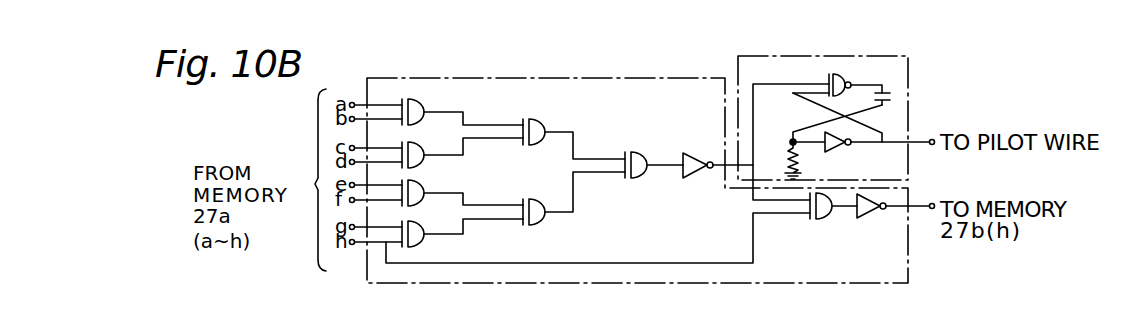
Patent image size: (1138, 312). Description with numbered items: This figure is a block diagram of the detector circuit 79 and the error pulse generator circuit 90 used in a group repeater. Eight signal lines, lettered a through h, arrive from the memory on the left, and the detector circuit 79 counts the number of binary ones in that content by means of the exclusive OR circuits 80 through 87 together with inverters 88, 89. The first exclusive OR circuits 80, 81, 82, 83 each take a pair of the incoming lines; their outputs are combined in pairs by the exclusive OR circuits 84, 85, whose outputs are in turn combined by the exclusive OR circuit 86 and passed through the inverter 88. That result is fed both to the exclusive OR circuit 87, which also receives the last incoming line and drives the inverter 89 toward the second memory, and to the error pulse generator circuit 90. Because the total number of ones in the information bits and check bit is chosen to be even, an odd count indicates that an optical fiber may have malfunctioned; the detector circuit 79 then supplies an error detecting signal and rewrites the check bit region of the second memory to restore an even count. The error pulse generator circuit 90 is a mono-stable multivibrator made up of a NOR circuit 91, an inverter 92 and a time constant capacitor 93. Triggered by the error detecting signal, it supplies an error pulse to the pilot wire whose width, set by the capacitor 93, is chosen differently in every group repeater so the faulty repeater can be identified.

The detector circuit 79 is at (815, 285).
The exclusive OR circuit 80 is at (417, 100).
The exclusive OR circuit 81 is at (417, 143).
The exclusive OR circuit 82 is at (417, 181).
The exclusive OR circuit 83 is at (417, 222).
The exclusive OR circuit 84 is at (538, 120).
The exclusive OR circuit 85 is at (549, 188).
The exclusive OR circuit 86 is at (640, 152).
The exclusive OR circuit 87 is at (825, 219).
The inverter 88 is at (695, 178).
The inverter 89 is at (870, 218).
The error pulse generator circuit 90 is at (908, 82).
The NOR circuit 91 is at (840, 74).
The inverter 92 is at (850, 146).
The time constant capacitor 93 is at (892, 97).